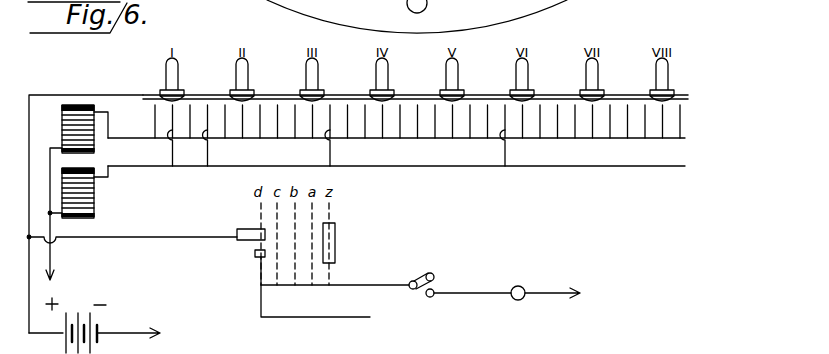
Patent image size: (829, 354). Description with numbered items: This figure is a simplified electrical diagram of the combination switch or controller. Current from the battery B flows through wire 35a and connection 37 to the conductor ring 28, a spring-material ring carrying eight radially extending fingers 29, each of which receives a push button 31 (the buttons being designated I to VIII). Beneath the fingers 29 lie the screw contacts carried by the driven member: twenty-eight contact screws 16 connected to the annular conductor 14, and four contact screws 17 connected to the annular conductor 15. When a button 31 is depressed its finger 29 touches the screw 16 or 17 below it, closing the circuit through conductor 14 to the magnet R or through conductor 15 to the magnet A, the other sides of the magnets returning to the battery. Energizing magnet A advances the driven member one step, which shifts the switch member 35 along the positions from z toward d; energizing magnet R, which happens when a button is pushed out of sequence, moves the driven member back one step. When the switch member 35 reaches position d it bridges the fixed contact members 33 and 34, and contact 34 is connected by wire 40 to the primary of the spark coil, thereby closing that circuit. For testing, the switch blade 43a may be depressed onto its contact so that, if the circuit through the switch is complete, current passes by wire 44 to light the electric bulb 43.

The connection 37 is at (80, 95).
The push button 31 is at (179, 76).
The radially extending member 29 is at (254, 98).
The conductor ring 28 is at (355, 92).
The screw contact 16 is at (258, 111).
The annular conductor 14 is at (683, 139).
The annular conductor 15 is at (667, 168).
The screw contact 17 is at (206, 153).
The magnet R is at (62, 125).
The magnet A is at (85, 197).
The wire 35a is at (177, 227).
The battery B is at (94, 315).
The fixed contact member 33 is at (252, 228).
The fixed contact member 34 is at (255, 253).
The switch member 35 is at (335, 235).
The wire 40 is at (343, 318).
The switch blade 43a is at (425, 273).
The wire 44 is at (480, 290).
The electric bulb 43 is at (520, 283).